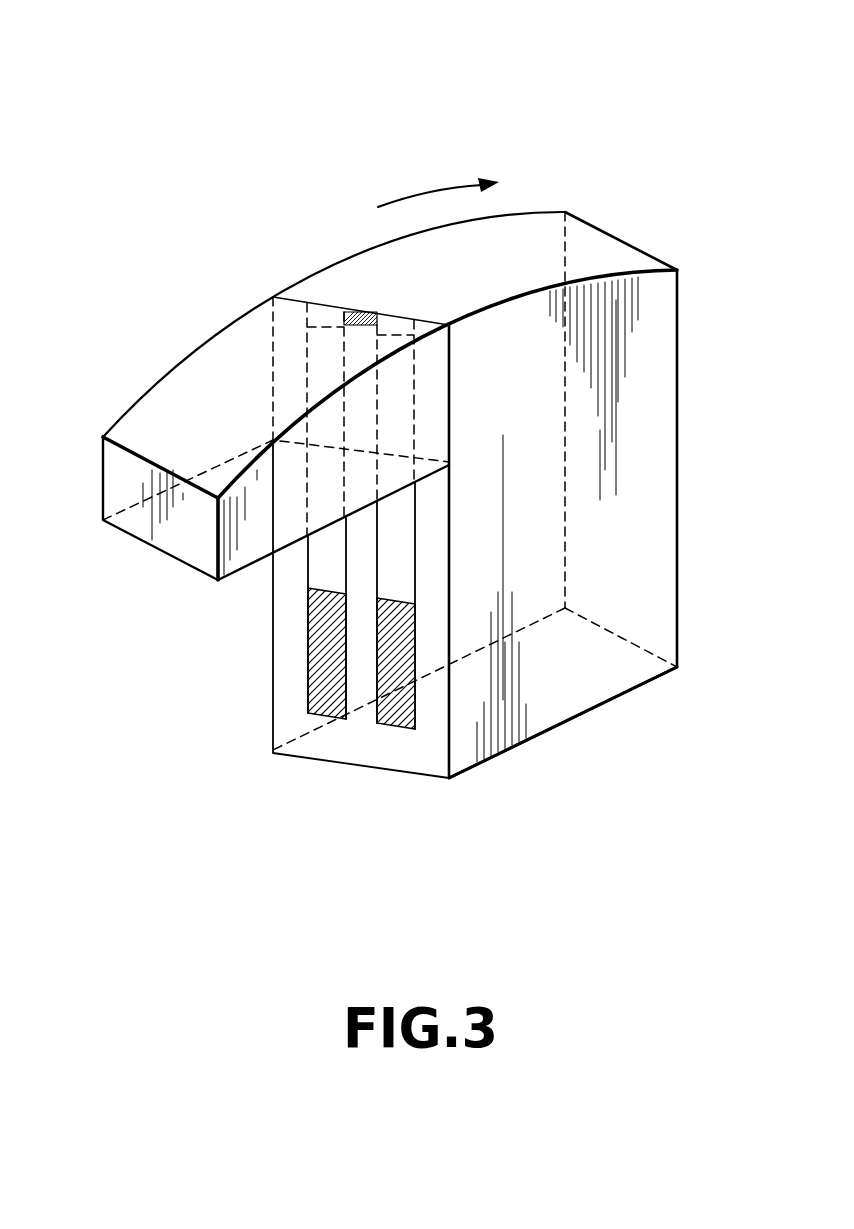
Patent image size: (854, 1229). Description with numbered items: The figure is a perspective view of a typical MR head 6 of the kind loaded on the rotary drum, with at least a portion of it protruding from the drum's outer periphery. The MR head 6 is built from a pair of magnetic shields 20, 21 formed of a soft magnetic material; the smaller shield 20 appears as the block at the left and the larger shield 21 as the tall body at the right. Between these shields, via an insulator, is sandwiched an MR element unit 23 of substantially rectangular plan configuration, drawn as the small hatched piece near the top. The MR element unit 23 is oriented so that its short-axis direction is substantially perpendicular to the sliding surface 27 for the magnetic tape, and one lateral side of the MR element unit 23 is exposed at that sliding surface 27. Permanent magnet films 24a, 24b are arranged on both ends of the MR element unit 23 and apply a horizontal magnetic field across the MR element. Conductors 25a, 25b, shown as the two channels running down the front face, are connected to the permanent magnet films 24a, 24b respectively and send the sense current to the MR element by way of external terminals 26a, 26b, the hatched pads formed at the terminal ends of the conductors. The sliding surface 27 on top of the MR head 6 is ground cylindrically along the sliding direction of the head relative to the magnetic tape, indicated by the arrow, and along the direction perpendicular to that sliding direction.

The MR head 6 is at (408, 435).
The magnetic shield 20 is at (147, 528).
The magnetic shield 21 is at (543, 690).
The MR element unit 23 is at (353, 308).
The permanent magnet film 24a is at (322, 315).
The permanent magnet film 24b is at (390, 313).
The conductor 25a is at (317, 557).
The conductor 25b is at (390, 567).
The external terminal 26a is at (320, 693).
The external terminal 26b is at (395, 692).
The sliding surface 27 is at (160, 415).